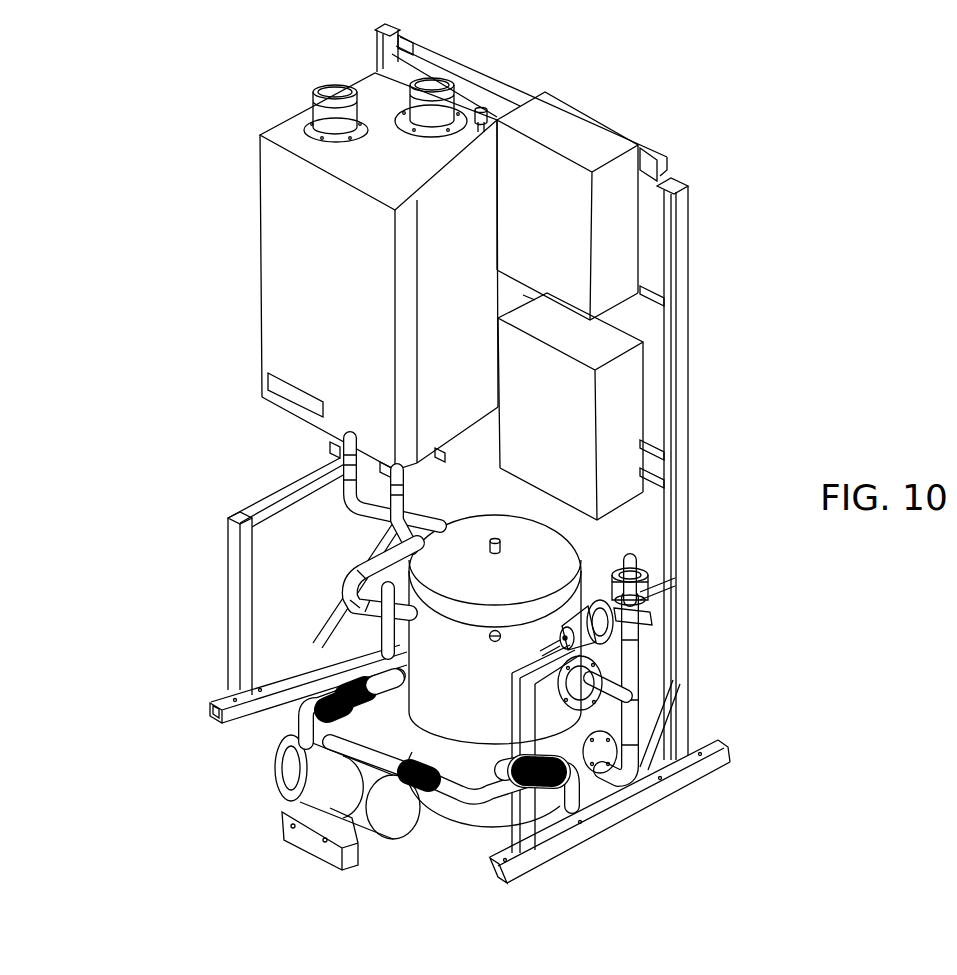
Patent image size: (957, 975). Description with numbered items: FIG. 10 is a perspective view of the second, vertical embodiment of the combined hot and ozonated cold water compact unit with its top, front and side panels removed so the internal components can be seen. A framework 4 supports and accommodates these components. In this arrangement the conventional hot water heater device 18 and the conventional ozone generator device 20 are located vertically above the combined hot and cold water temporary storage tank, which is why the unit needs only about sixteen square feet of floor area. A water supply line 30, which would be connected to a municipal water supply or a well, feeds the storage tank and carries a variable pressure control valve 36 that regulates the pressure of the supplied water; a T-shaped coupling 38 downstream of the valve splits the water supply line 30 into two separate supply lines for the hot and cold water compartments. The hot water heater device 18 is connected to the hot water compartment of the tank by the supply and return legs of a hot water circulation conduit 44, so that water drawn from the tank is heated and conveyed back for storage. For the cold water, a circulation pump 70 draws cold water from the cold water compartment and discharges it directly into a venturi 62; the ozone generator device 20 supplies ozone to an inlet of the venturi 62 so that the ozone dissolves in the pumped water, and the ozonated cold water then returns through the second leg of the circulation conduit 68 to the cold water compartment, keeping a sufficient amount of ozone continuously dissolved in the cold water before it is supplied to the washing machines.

The framework 4 is at (230, 612).
The hot water heater device 18 is at (272, 301).
The ozone generator device 20 is at (632, 362).
The hot water circulation conduit 44 is at (348, 502).
The variable pressure control valve 36 is at (642, 617).
The water supply line 30 is at (633, 674).
The T-shaped coupling 38 is at (638, 712).
The second leg of the circulation conduit 68 is at (290, 709).
The circulation pump 70 is at (388, 831).
The venturi 62 is at (552, 787).